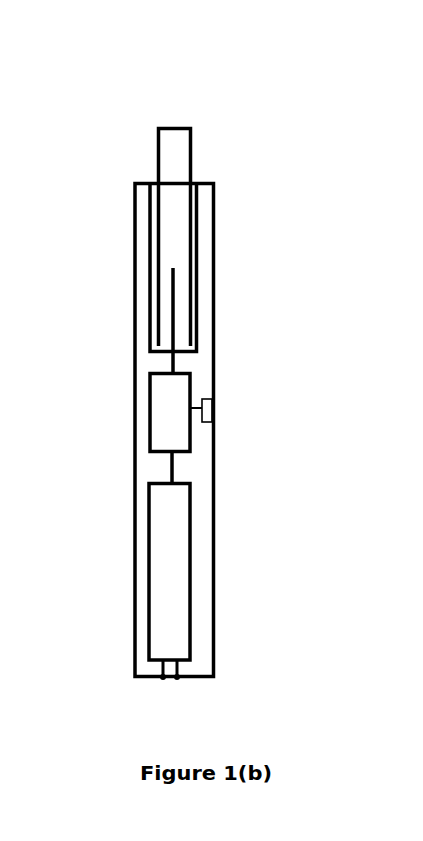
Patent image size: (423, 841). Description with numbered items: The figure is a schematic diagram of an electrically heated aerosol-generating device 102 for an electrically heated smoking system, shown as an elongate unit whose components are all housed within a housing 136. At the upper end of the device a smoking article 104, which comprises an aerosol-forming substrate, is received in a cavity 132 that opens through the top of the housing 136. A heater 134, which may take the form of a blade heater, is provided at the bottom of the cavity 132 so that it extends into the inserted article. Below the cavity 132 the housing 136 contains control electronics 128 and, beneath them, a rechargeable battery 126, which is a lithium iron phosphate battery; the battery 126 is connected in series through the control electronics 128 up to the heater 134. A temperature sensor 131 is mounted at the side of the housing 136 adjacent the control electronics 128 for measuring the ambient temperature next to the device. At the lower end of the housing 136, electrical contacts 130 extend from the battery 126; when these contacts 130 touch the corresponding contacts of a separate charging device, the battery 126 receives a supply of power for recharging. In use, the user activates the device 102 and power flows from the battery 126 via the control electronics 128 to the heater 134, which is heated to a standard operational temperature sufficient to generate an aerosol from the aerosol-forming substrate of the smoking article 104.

The electrically heated aerosol-generating device 102 is at (78, 198).
The smoking article 104 is at (177, 139).
The rechargeable battery 126 is at (158, 542).
The control electronics 128 is at (158, 410).
The electrical contacts 130 is at (160, 678).
The temperature sensor 131 is at (203, 412).
The cavity 132 is at (153, 249).
The heater 134 is at (173, 298).
The housing 136 is at (137, 197).